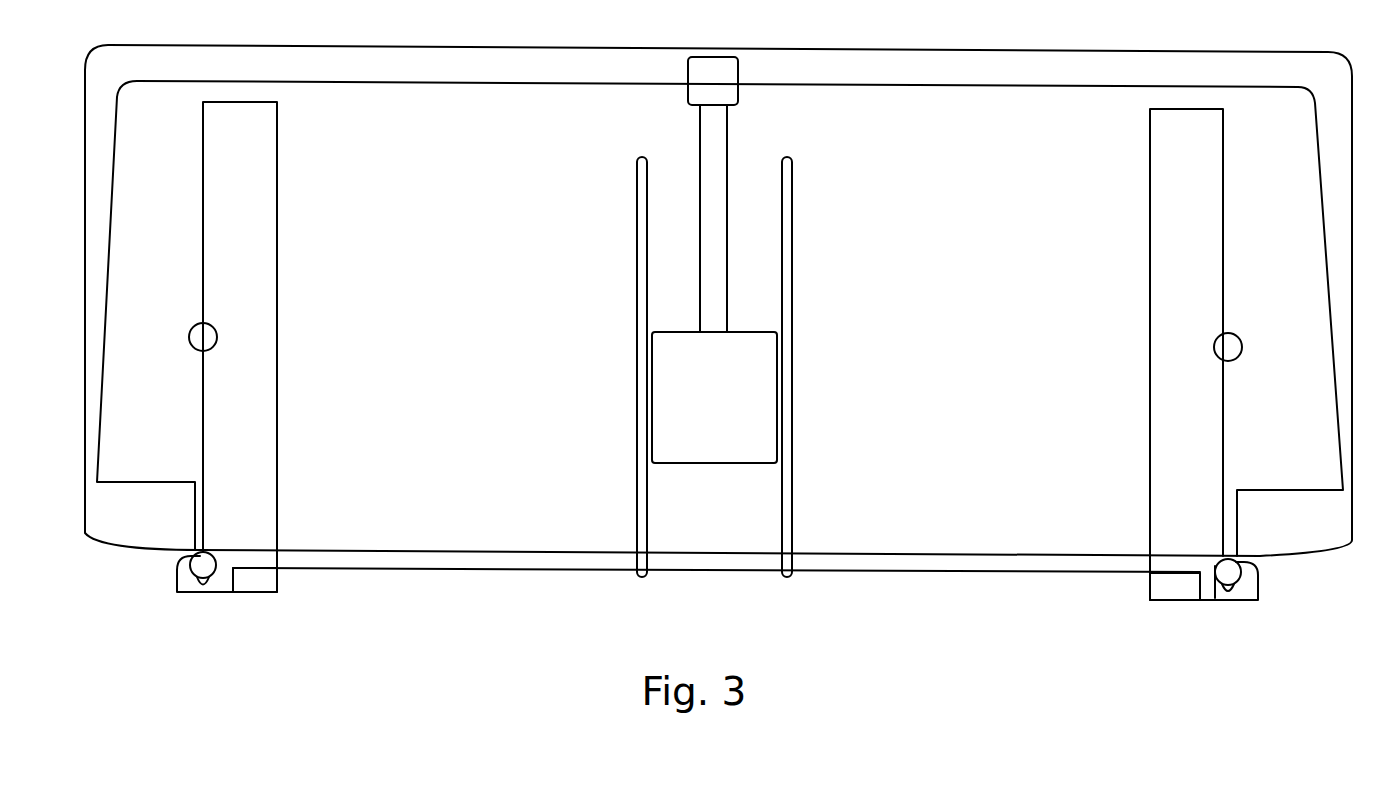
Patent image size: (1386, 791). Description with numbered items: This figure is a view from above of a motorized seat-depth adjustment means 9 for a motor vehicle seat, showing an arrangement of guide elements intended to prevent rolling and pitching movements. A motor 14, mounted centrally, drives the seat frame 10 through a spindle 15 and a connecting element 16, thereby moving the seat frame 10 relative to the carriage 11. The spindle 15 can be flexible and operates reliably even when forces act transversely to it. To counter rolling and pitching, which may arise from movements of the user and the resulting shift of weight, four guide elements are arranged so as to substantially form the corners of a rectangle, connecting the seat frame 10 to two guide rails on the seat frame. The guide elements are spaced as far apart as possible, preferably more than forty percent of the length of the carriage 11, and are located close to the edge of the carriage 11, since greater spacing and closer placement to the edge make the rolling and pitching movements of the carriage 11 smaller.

The seat-depth adjustment means 9 is at (718, 278).
The seat frame 10 is at (720, 311).
The carriage 11 is at (481, 299).
The motor 14 is at (714, 397).
The spindle 15 is at (713, 140).
The connecting element 16 is at (713, 81).